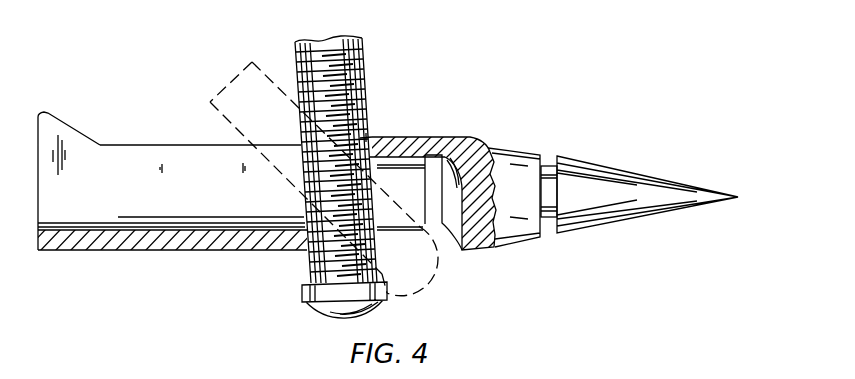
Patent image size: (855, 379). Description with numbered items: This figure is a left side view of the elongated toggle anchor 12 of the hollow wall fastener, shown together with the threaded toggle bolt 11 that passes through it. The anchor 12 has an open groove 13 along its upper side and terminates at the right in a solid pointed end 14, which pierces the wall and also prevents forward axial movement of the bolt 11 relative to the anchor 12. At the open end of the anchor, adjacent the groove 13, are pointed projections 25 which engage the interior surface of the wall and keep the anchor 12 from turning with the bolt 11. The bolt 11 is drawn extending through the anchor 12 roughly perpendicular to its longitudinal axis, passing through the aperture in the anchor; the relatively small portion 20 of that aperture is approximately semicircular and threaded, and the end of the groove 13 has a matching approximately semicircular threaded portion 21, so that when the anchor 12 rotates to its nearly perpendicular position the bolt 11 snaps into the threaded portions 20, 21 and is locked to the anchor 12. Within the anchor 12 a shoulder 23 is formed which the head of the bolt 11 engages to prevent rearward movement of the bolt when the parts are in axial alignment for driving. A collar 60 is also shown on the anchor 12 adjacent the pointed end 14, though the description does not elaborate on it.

The threaded toggle bolt 11 is at (362, 66).
The elongated toggle anchor 12 is at (90, 249).
The open groove 13 is at (137, 162).
The pointed end 14 is at (686, 186).
The threaded portion of aperture 20 is at (323, 262).
The semicircular threaded portion 21 is at (363, 138).
The shoulder 23 is at (428, 155).
The pointed projections 25 is at (62, 121).
The collar 60 is at (550, 161).